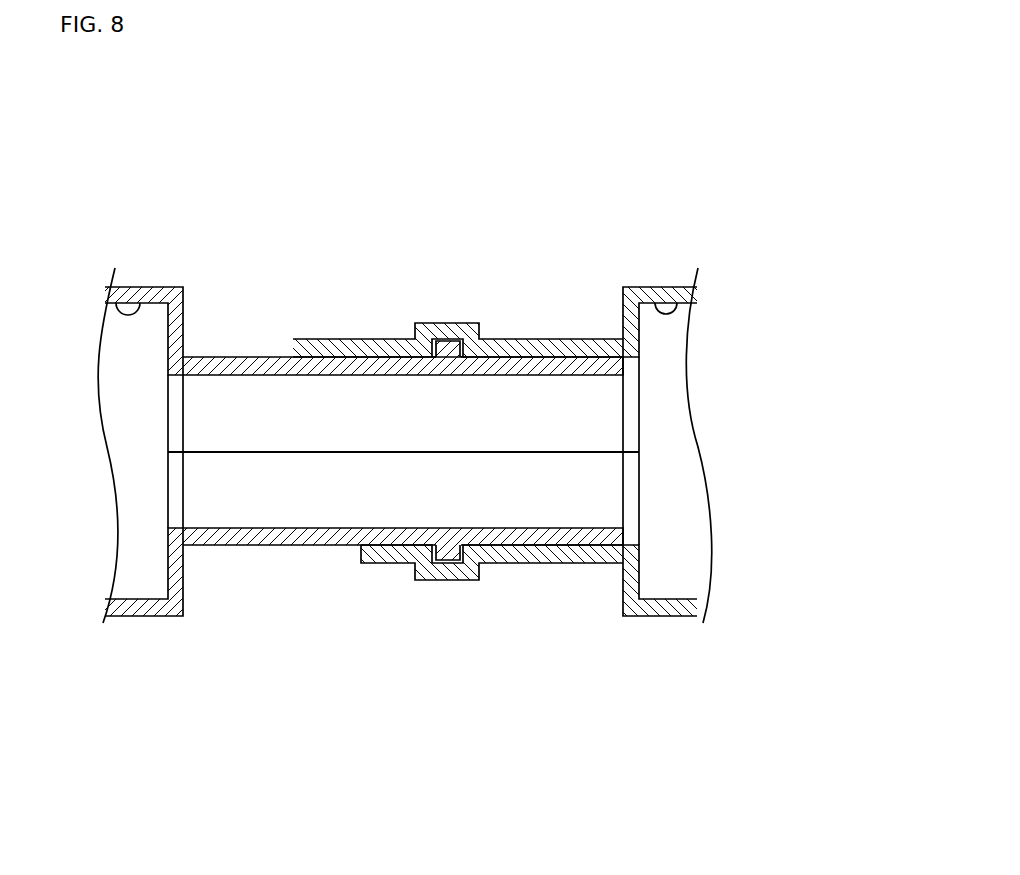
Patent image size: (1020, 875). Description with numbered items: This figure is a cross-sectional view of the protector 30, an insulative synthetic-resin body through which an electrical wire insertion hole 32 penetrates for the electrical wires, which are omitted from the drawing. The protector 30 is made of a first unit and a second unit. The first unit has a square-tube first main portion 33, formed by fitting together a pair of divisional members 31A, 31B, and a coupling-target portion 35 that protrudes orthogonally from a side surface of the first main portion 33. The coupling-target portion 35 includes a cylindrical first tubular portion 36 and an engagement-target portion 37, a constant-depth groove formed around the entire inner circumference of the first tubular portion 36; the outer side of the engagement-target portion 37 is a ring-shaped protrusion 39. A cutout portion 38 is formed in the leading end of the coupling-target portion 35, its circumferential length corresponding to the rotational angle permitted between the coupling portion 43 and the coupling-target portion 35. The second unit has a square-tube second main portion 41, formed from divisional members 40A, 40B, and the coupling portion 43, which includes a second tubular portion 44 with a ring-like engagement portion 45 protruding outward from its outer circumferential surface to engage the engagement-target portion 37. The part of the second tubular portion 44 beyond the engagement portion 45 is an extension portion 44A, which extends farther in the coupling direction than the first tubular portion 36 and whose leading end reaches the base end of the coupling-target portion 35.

The protector 30 is at (464, 147).
The divisional member 31A is at (652, 293).
The divisional member 31B is at (663, 611).
The electrical wire insertion hole 32 is at (107, 300).
The first main portion 33 is at (613, 650).
The coupling-target portion 35 is at (560, 665).
The first tubular portion 36 is at (518, 557).
The engagement-target portion 37 is at (474, 562).
The cutout portion 38 is at (360, 558).
The ring-shaped protrusion 39 is at (458, 323).
The divisional member 40A is at (163, 298).
The divisional member 40B is at (160, 607).
The second main portion 41 is at (197, 628).
The coupling portion 43 is at (413, 253).
The second tubular portion 44 is at (346, 365).
The extension portion 44A is at (566, 363).
The engagement portion 45 is at (443, 343).